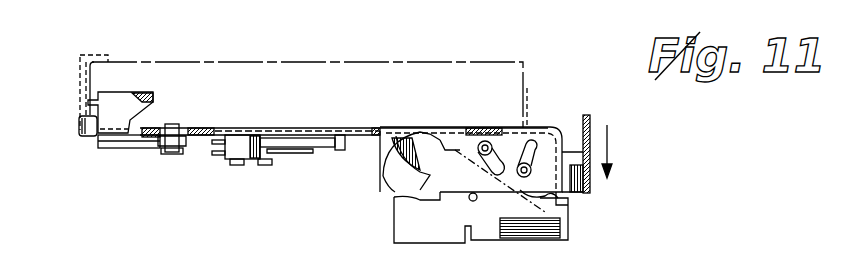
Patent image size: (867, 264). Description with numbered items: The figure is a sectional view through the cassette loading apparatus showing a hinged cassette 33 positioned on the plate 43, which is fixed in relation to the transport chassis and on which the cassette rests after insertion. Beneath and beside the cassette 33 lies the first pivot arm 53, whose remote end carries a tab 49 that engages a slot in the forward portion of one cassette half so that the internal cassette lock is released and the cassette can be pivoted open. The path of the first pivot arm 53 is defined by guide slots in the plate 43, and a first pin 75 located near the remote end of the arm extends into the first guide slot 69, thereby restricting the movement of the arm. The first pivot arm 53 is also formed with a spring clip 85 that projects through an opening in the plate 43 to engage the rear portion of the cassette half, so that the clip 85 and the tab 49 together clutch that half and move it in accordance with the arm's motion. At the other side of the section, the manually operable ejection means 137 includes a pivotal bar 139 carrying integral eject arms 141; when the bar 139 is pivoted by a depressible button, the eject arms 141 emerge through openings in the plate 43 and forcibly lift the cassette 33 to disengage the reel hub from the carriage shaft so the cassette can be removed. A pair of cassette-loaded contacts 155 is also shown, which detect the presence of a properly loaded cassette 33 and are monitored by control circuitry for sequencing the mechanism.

The hinged cassette 33 is at (167, 42).
The tab 49 is at (88, 100).
The first pivot arm 53 is at (143, 146).
The first pin 75 is at (170, 152).
The first guide slot 69 is at (190, 128).
The plate 43 is at (365, 137).
The cassette-loaded contacts 155 is at (288, 158).
The eject arms 141 is at (388, 173).
The spring clip 85 is at (538, 99).
The pivotal bar 139 is at (596, 118).
The ejection means 137 is at (582, 203).